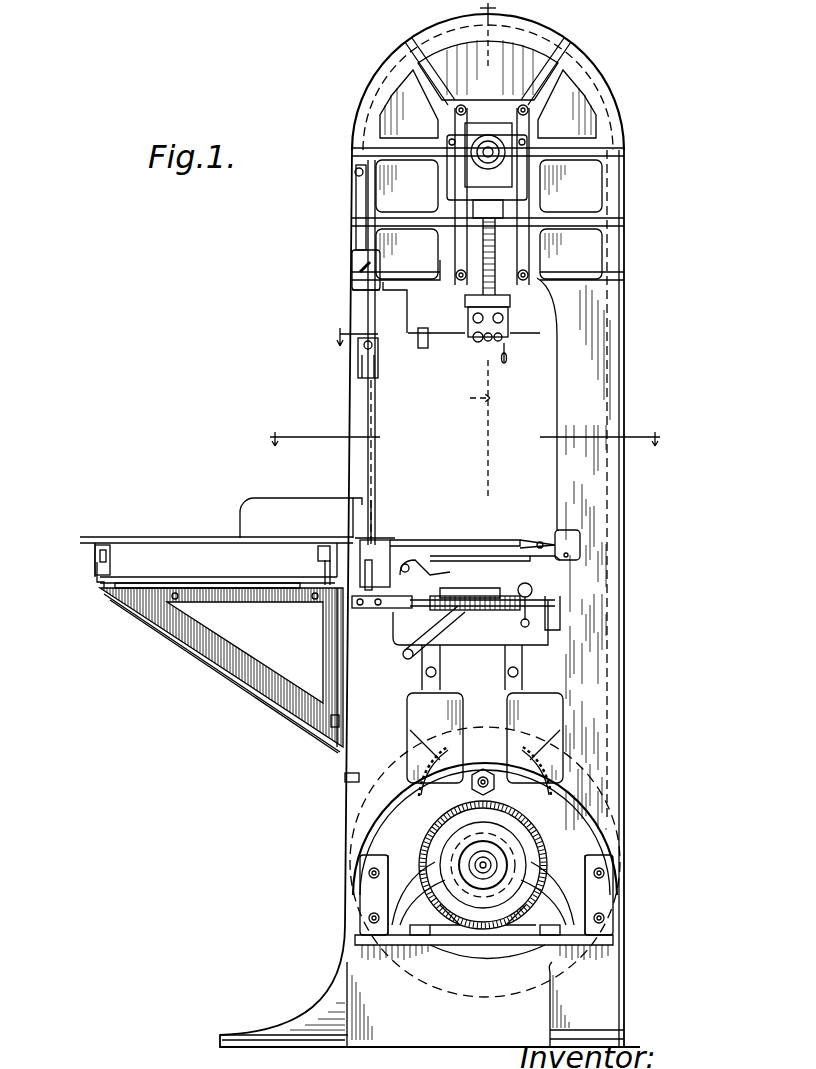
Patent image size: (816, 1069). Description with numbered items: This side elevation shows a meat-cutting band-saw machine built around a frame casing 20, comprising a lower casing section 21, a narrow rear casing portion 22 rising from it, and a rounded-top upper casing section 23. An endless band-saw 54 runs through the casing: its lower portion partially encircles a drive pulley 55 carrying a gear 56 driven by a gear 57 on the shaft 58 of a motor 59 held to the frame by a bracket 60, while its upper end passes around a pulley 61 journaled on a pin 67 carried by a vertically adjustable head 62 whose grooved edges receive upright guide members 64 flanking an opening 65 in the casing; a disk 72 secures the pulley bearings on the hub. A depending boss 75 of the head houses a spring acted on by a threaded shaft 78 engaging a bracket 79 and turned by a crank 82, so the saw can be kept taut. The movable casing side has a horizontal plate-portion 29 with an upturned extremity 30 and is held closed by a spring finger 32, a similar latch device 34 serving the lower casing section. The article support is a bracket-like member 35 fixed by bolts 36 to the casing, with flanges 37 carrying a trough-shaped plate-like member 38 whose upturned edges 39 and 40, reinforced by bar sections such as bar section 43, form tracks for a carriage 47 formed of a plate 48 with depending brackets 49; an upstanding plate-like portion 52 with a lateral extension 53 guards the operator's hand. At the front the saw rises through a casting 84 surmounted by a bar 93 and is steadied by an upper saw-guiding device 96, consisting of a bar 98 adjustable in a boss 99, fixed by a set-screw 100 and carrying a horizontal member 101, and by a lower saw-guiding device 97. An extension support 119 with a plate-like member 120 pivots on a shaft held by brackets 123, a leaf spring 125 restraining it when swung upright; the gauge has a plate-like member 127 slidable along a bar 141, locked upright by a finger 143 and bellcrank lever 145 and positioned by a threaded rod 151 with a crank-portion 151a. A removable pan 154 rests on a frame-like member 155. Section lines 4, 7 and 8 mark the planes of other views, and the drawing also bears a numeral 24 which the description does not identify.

The section line 4 is at (469, 433).
The section line 7 is at (482, 430).
The section line 8 is at (352, 334).
The frame casing 20 is at (610, 735).
The lower casing section 21 is at (598, 680).
The casing portion 22 is at (610, 572).
The upper casing section 23 is at (612, 195).
The upper band wheel 24 is at (488, 62).
The horizontal plate-portion 29 is at (426, 348).
The upwardly-extending plate-like extremity 30 is at (407, 330).
The spring finger 32 is at (420, 350).
The latch device 34 is at (345, 778).
The bracket-like member 35 is at (248, 682).
The bolts 36 is at (322, 603).
The horizontal flanges 37 is at (140, 612).
The plate-like member 38 is at (180, 577).
The front edge flange 39 is at (105, 565).
The rear edge flange 40 is at (325, 567).
The bar section 43 is at (97, 584).
The carriage 47 is at (172, 538).
The plate 48 is at (142, 538).
The depending brackets 49 is at (95, 548).
The upstanding plate-like portion 52 is at (285, 500).
The lateral extension 53 is at (353, 500).
The band-saw 54 is at (368, 425).
The pulley 55 is at (585, 790).
The gear 56 is at (540, 735).
The gear 57 is at (500, 860).
The shaft 58 is at (550, 860).
The motor 59 is at (500, 865).
The bracket 60 is at (600, 930).
The pulley 61 is at (565, 245).
The head 62 is at (530, 178).
The upright guide members 64 is at (453, 125).
The opening 65 is at (596, 190).
The pin 67 is at (552, 140).
The disk 72 is at (492, 140).
The depending boss 75 is at (478, 210).
The threaded shaft 78 is at (470, 300).
The bracket 79 is at (508, 350).
The crank 82 is at (462, 350).
The casting 84 is at (358, 545).
The bar 93 is at (380, 540).
The upper saw-guiding device 96 is at (358, 365).
The lower saw-guiding device 97 is at (430, 558).
The bar 98 is at (352, 255).
The boss 99 is at (358, 290).
The set-screw 100 is at (360, 270).
The member 101 is at (362, 370).
The extension support 119 is at (492, 540).
The plate-like member 120 is at (470, 518).
The brackets 123 is at (555, 535).
The leaf spring 125 is at (550, 560).
The plate-like member 127 is at (490, 590).
The bar 141 is at (350, 625).
The finger 143 is at (404, 652).
The lever 145 is at (420, 670).
The threaded rod 151 is at (488, 616).
The crank-portion 151a is at (560, 610).
The pan 154 is at (522, 586).
The frame-like member 155 is at (483, 648).